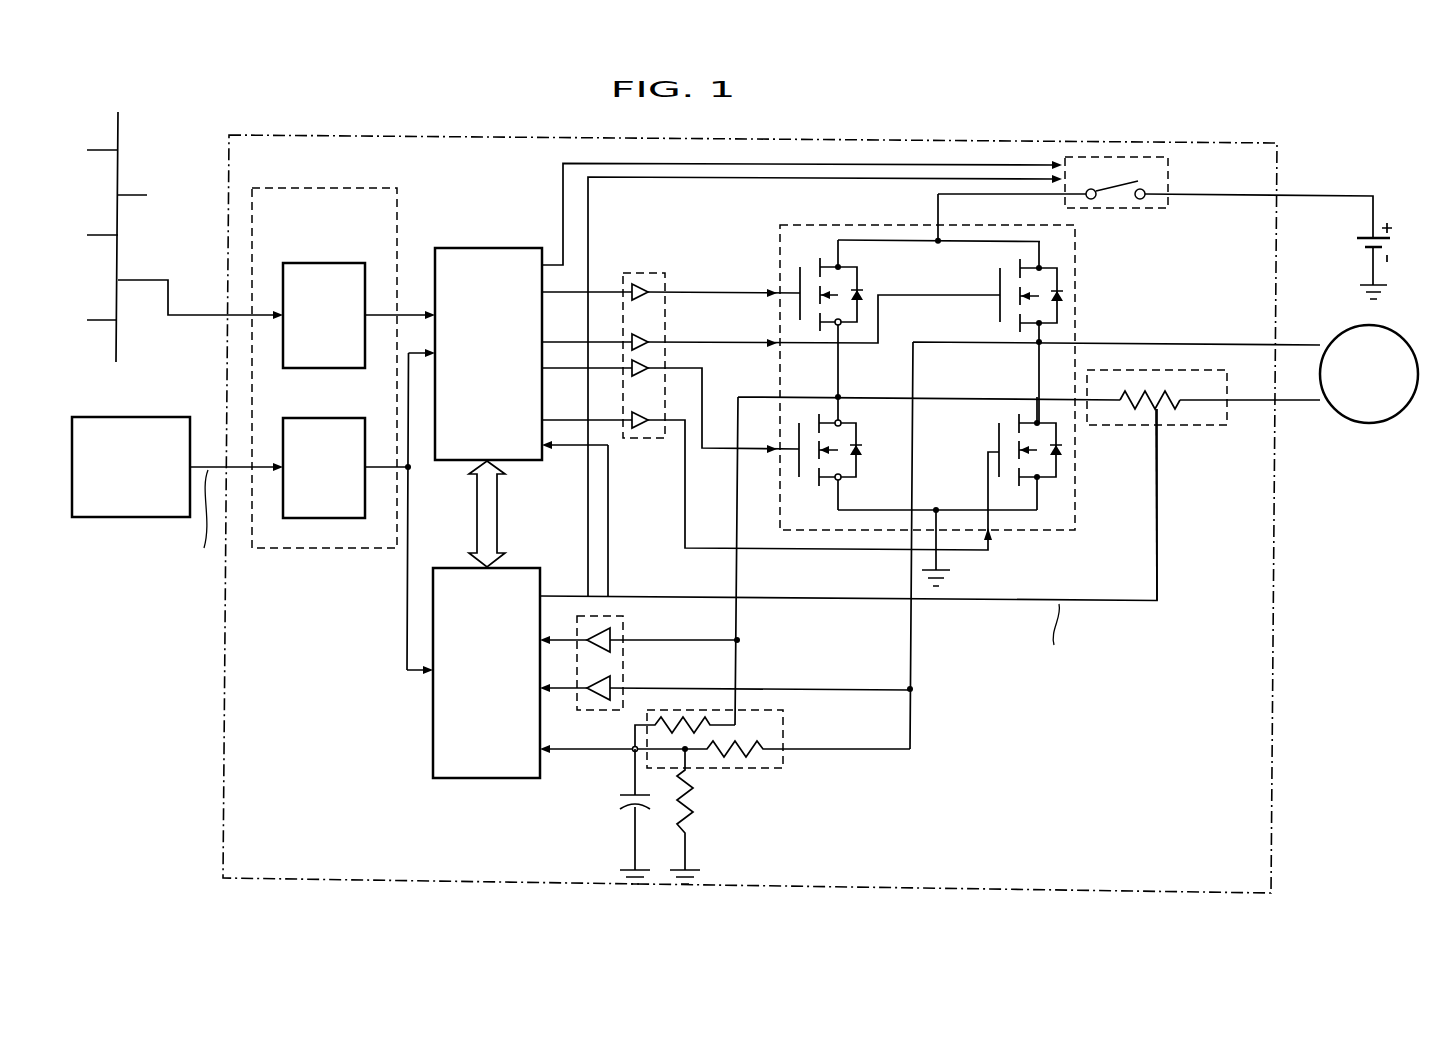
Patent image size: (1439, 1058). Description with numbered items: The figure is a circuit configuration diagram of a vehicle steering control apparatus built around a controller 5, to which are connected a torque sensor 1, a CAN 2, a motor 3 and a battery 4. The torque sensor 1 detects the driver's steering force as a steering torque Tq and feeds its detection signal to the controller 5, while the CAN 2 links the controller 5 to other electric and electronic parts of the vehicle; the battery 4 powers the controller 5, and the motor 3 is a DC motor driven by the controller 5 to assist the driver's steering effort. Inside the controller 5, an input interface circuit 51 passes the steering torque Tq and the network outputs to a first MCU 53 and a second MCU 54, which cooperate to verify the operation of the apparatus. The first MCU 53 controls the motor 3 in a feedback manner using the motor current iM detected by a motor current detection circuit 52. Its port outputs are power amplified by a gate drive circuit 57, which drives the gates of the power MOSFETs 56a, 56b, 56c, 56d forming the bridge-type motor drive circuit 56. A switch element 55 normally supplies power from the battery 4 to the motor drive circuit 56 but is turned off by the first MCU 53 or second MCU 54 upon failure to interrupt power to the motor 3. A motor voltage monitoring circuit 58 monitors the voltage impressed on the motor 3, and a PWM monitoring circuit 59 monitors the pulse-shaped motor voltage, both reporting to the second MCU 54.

The torque sensor 1 is at (152, 412).
The CAN (Control Area Network) 2 is at (138, 178).
The motor 3 is at (1370, 424).
The battery 4 is at (1352, 239).
The controller 5 is at (1277, 743).
The input interface circuit 51 is at (318, 548).
The motor current detection circuit 52 is at (1196, 427).
The first microcontroller (MCU) 53 is at (483, 247).
The second microcontroller (MCU) 54 is at (485, 780).
The switch element 55 is at (1130, 210).
The motor drive circuit 56 is at (933, 432).
The power MOSFET 56a is at (860, 284).
The power MOSFET 56b is at (998, 442).
The power MOSFET 56c is at (1000, 275).
The power MOSFET 56d is at (858, 462).
The gate drive circuit 57 is at (641, 272).
The motor voltage monitoring circuit 58 is at (757, 770).
The PWM monitoring circuit 59 is at (623, 658).